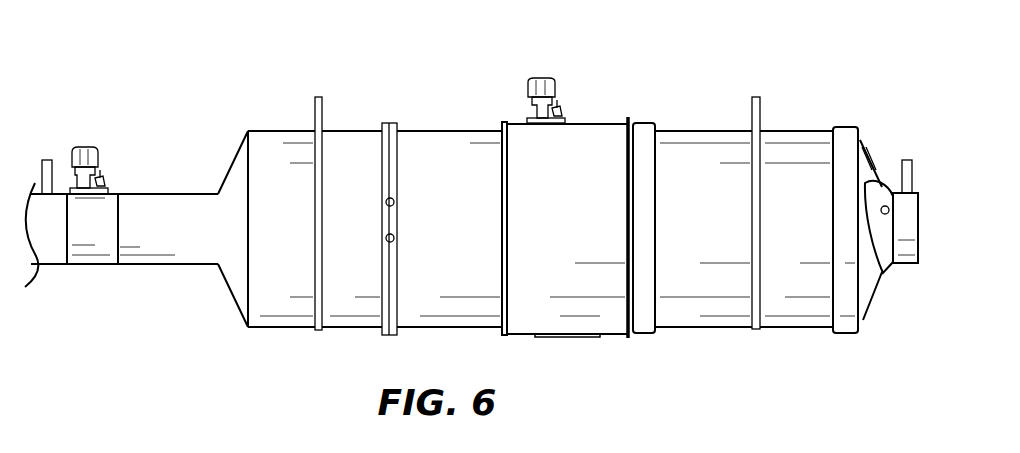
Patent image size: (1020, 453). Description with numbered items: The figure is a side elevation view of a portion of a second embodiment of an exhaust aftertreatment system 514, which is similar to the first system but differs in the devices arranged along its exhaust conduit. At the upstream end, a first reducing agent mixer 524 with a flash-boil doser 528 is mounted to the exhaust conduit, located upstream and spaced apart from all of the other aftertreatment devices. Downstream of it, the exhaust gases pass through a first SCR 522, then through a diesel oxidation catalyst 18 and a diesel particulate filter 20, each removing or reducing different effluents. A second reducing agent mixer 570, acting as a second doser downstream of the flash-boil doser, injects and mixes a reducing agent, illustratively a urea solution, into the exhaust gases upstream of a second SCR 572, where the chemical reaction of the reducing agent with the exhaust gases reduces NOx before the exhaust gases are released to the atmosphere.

The exhaust aftertreatment system 514 is at (832, 70).
The flash-boil doser 528 is at (75, 137).
The first reducing agent mixer 524 is at (95, 138).
The first SCR 522 is at (282, 125).
The diesel oxidation catalyst 18 is at (367, 128).
The diesel particulate filter 20 is at (442, 125).
The second reducing agent mixer 570 is at (520, 85).
The second SCR 572 is at (715, 118).